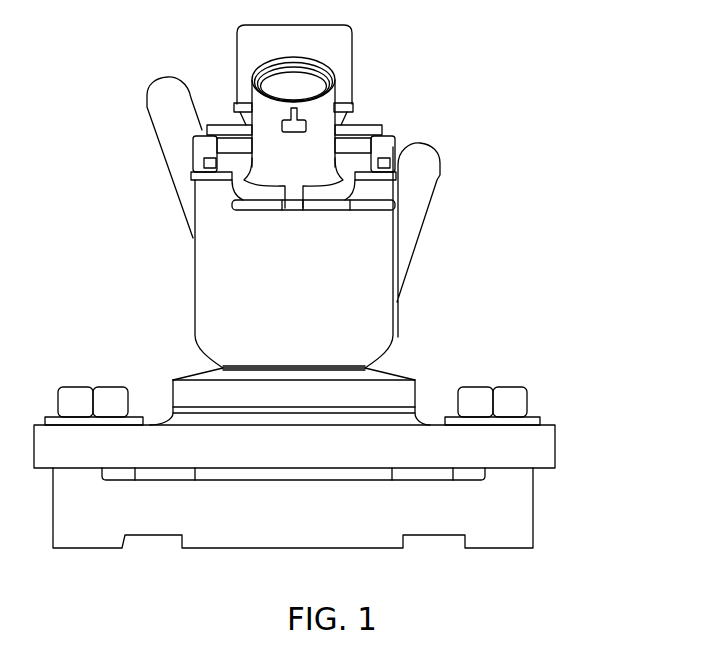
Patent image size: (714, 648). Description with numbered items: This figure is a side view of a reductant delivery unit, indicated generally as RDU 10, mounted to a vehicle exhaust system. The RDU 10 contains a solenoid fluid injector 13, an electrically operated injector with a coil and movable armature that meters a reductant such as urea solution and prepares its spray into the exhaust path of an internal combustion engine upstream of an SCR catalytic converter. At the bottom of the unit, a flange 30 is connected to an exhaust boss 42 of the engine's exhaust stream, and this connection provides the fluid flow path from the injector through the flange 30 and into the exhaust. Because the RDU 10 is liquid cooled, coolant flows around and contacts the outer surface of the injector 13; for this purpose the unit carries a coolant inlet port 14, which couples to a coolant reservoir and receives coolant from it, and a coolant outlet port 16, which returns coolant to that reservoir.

The RDU 10 is at (433, 68).
The solenoid fluid injector 13 is at (323, 196).
The coolant inlet port 14 is at (432, 155).
The coolant outlet port 16 is at (158, 77).
The flange 30 is at (547, 448).
The exhaust boss 42 is at (522, 527).